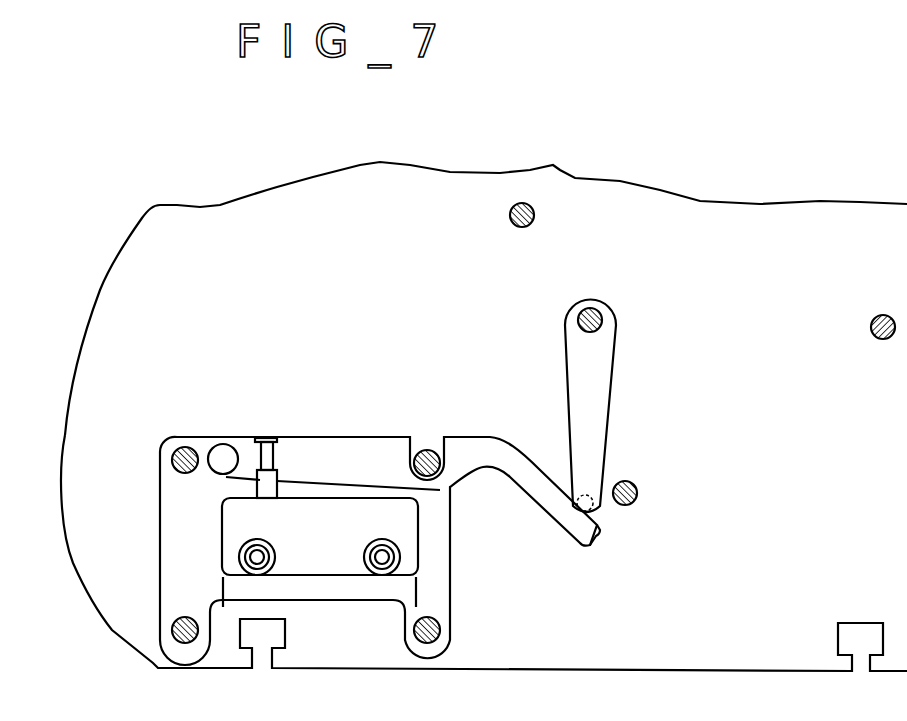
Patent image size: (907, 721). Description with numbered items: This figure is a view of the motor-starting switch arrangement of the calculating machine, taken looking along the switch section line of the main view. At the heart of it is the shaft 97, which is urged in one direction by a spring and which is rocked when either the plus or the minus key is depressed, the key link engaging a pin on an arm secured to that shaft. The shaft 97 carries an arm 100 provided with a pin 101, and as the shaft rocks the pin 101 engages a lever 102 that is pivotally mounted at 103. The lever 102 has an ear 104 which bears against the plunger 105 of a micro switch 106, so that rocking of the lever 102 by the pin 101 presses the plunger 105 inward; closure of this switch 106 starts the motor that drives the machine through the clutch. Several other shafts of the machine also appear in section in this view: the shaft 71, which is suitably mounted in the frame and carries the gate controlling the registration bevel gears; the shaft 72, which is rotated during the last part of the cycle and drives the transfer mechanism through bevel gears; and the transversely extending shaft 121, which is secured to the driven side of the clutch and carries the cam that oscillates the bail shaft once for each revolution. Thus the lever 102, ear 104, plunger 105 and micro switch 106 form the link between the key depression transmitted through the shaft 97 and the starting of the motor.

The shaft 71 is at (535, 218).
The shaft 72 is at (871, 324).
The shaft 97 is at (603, 319).
The arm 100 is at (598, 431).
The pin 101 is at (598, 514).
The lever 102 is at (537, 489).
The pivot 103 is at (222, 443).
The ear 104 is at (268, 440).
The plunger 105 is at (273, 457).
The micro switch 106 is at (230, 522).
The shaft 121 is at (637, 493).